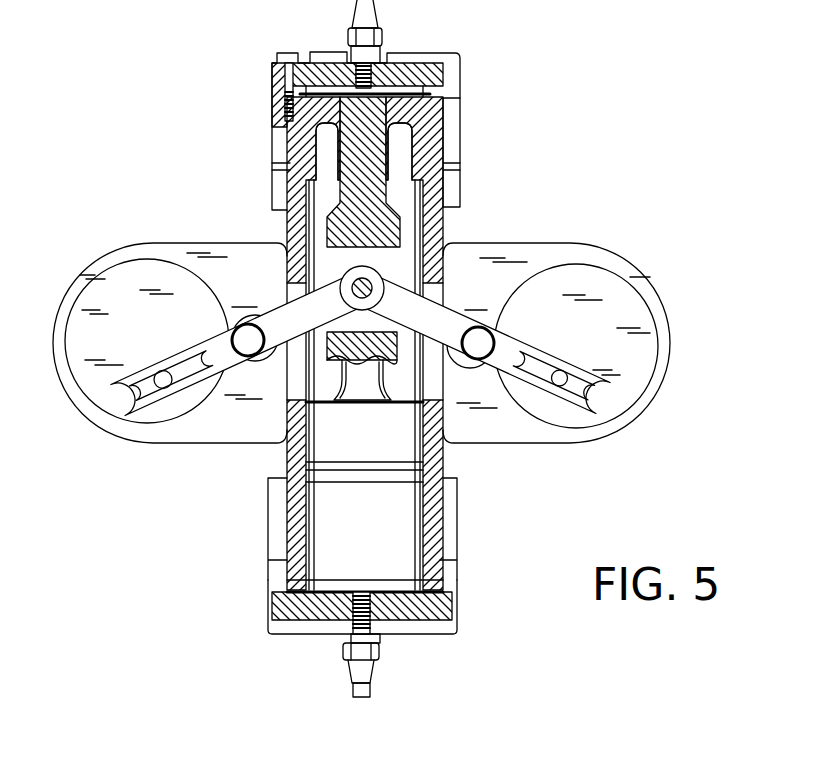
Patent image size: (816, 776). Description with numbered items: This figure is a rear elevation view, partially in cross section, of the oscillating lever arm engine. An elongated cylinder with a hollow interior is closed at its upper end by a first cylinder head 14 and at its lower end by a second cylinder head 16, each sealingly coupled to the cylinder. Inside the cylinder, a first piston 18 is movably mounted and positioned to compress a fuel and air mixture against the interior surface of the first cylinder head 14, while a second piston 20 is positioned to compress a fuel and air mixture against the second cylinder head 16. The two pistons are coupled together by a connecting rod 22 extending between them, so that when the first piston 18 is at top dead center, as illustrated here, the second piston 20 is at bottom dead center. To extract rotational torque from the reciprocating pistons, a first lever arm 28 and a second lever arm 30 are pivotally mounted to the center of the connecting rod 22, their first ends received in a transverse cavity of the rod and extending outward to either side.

The first cylinder head 14 is at (462, 72).
The second cylinder head 16 is at (457, 622).
The first piston 18 is at (320, 142).
The second piston 20 is at (355, 487).
The connecting rod 22 is at (412, 140).
The first lever arm 28 is at (222, 345).
The second lever arm 30 is at (505, 347).